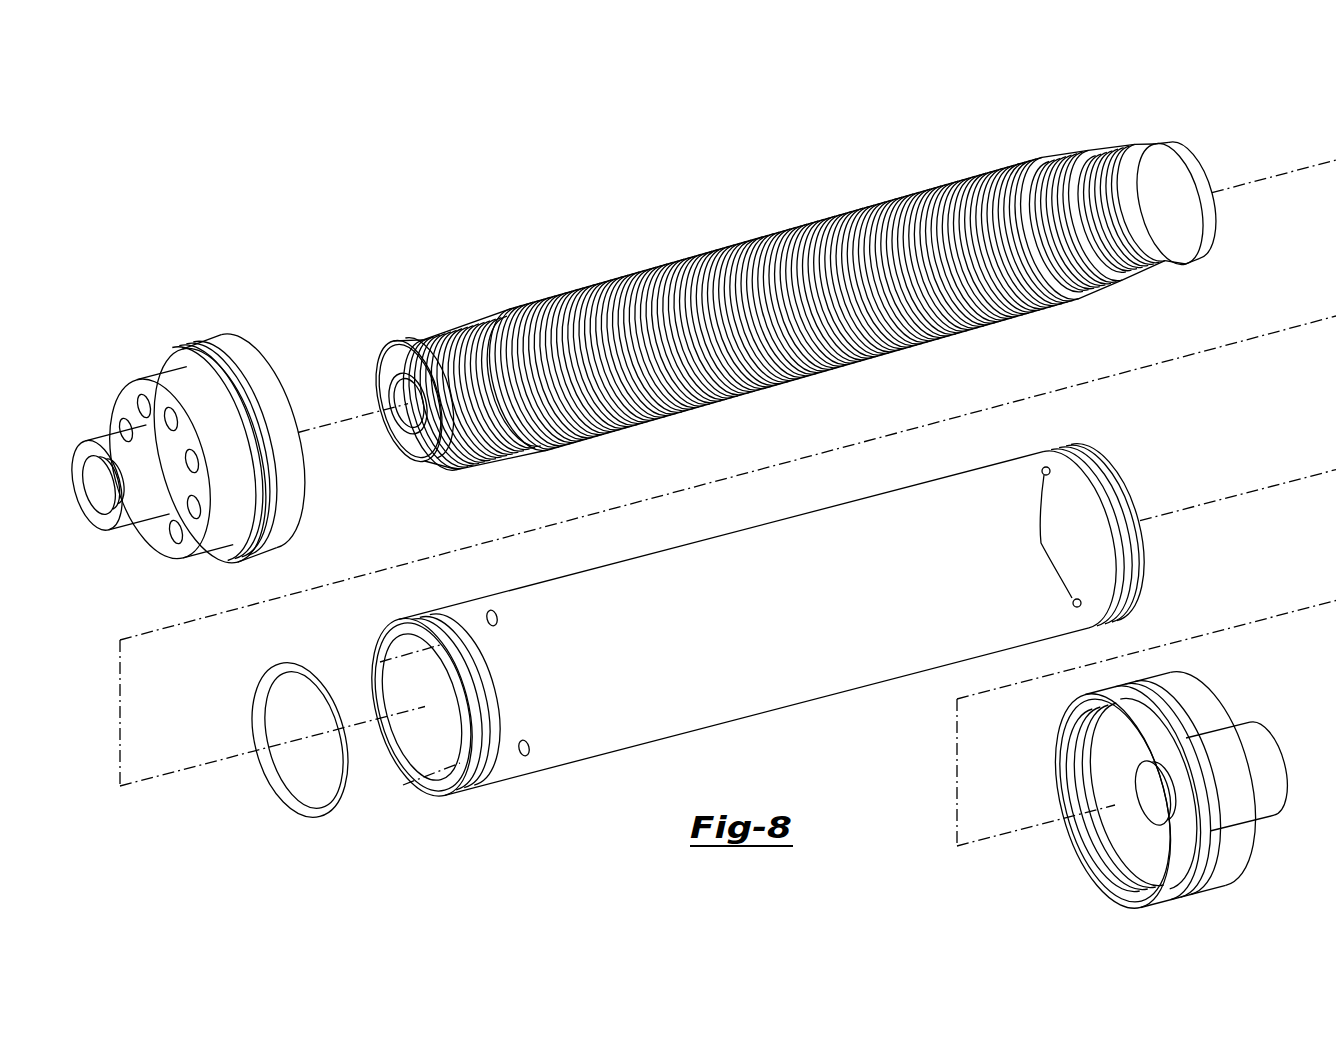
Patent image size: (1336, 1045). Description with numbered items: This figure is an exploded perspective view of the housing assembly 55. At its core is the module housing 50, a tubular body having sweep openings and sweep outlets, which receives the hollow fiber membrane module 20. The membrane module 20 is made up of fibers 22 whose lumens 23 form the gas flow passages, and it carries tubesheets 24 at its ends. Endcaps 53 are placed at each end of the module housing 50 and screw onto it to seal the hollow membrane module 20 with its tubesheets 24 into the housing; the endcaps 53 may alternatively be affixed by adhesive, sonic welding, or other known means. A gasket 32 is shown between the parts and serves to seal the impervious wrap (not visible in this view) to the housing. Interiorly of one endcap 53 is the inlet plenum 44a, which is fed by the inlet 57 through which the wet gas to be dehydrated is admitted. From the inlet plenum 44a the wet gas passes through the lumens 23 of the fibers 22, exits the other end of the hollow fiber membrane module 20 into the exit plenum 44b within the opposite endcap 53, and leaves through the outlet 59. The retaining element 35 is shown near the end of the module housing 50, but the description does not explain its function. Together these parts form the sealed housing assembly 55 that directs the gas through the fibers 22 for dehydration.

The hollow fiber membrane module 20 is at (719, 238).
The fibers 22 is at (480, 458).
The lumens 23 is at (412, 455).
The tubesheets 24 is at (418, 340).
The gasket 32 is at (290, 791).
The retaining clip 35 is at (1040, 543).
The inlet plenum 44a is at (220, 394).
The exit plenum 44b is at (1118, 845).
The module housing 50 is at (614, 771).
The endcaps 53 is at (170, 378).
The housing assembly 55 is at (446, 211).
The inlet 57 is at (108, 440).
The outlet 59 is at (1272, 738).